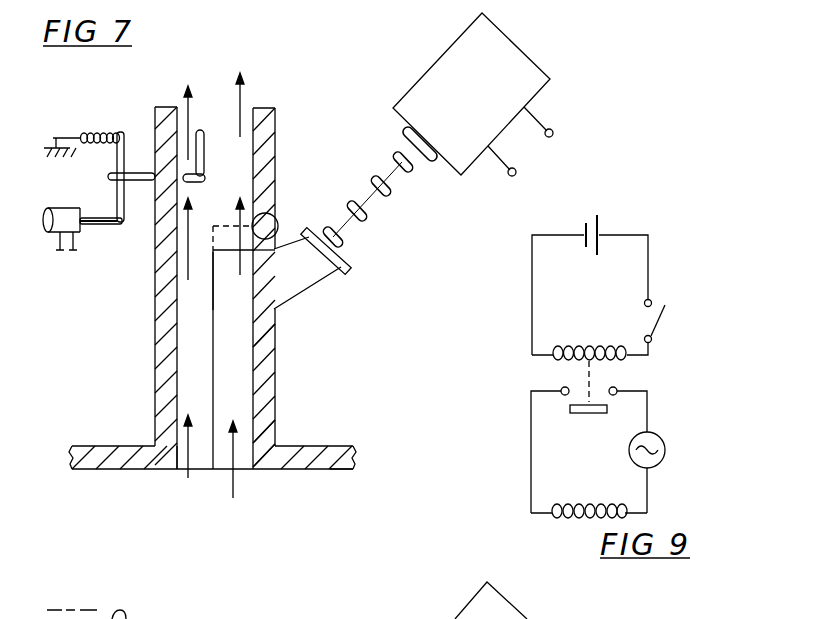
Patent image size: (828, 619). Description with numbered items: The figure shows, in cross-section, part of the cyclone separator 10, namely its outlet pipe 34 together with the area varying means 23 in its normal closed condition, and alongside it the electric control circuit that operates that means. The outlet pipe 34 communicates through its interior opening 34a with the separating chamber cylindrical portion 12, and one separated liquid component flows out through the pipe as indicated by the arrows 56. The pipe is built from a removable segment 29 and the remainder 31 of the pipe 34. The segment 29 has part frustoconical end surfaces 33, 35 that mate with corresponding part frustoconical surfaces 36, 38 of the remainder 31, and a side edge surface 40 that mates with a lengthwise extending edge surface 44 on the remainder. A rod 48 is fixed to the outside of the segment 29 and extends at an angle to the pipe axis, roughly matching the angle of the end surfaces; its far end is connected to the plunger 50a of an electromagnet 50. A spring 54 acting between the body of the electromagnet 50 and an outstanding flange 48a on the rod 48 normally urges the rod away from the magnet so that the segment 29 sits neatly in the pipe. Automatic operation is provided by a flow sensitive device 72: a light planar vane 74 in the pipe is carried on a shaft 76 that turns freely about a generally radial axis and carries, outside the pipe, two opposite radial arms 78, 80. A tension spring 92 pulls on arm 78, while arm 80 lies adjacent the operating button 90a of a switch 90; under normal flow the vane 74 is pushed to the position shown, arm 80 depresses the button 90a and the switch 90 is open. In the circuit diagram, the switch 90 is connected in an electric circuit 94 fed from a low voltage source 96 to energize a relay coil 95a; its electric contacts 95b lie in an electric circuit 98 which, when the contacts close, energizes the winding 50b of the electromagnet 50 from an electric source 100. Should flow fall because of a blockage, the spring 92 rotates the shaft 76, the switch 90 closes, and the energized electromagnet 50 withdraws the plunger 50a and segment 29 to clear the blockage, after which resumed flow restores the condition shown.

In FIG. 7, the base plate 10 is at (340, 473).
In FIG. 7, the separating chamber cylindrical portion 12 is at (315, 470).
In FIG. 7, the area varying means 23 is at (367, 68).
In FIG. 7, the segment 29 is at (268, 345).
In FIG. 7, the remainder of the pipe 31 is at (185, 345).
In FIG. 7, the part frustoconical end surface 33 is at (262, 244).
In FIG. 7, the outlet pipe 34 is at (272, 160).
In FIG. 7, the interior opening 34a is at (178, 460).
In FIG. 7, the part frustoconical end surface 35 is at (264, 445).
In FIG. 7, the part frustoconical surface 36 is at (266, 212).
In FIG. 7, the part frustoconical surface 38 is at (270, 469).
In FIG. 7, the side edge surface 40 is at (213, 366).
In FIG. 7, the lengthwise extending edge surface 44 is at (213, 310).
In FIG. 7, the rod 48 is at (318, 272).
In FIG. 7, the outstanding flange 48a is at (352, 262).
In FIG. 7, the electromagnet 50 is at (493, 52).
In FIG. 7, the plunger 50a is at (425, 160).
In FIG. 9, the winding 50b is at (598, 505).
In FIG. 7, the spring 54 is at (375, 175).
In FIG. 7, the arrows 56 is at (252, 108).
In FIG. 7, the flow sensitive device 72 is at (75, 116).
In FIG. 7, the vane 74 is at (205, 157).
In FIG. 7, the shaft 76 is at (190, 183).
In FIG. 7, the radial arm 78 is at (112, 158).
In FIG. 7, the radial arm 80 is at (112, 197).
In FIG. 7, the switch 90 is at (46, 233).
In FIG. 9, the switch 90 is at (655, 333).
In FIG. 7, the operating button 90a is at (92, 226).
In FIG. 7, the tension spring 92 is at (101, 133).
In FIG. 9, the electric circuit 94 is at (659, 286).
In FIG. 9, the relay coil 95a is at (591, 352).
In FIG. 9, the electric contacts 95b is at (595, 415).
In FIG. 9, the low voltage source 96 is at (600, 225).
In FIG. 9, the electric circuit 98 is at (658, 414).
In FIG. 9, the electric source 100 is at (652, 468).